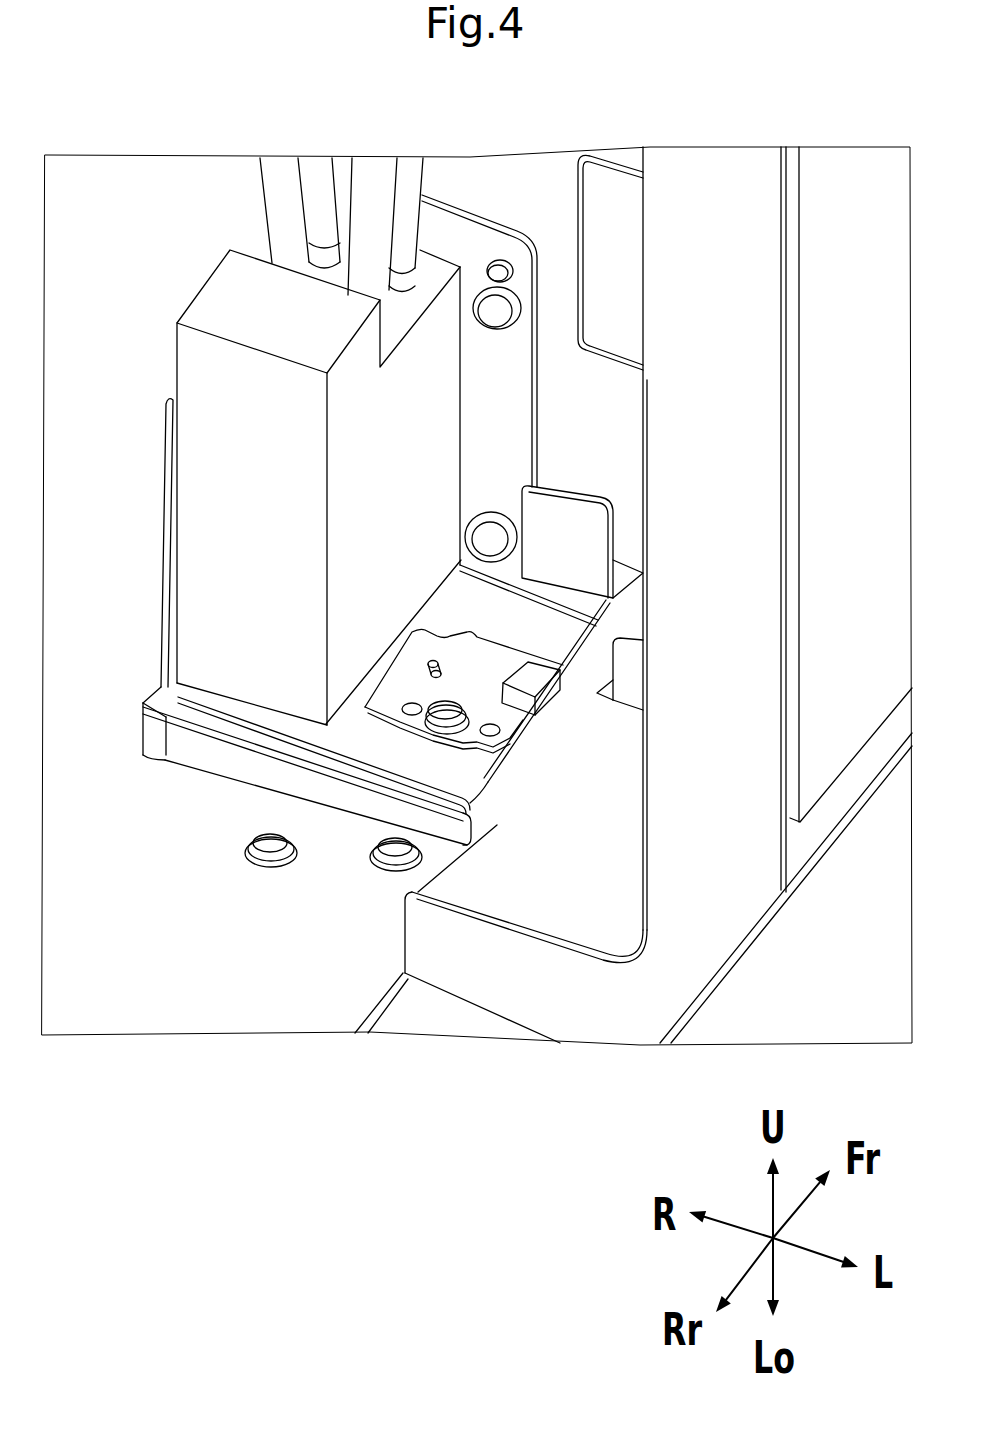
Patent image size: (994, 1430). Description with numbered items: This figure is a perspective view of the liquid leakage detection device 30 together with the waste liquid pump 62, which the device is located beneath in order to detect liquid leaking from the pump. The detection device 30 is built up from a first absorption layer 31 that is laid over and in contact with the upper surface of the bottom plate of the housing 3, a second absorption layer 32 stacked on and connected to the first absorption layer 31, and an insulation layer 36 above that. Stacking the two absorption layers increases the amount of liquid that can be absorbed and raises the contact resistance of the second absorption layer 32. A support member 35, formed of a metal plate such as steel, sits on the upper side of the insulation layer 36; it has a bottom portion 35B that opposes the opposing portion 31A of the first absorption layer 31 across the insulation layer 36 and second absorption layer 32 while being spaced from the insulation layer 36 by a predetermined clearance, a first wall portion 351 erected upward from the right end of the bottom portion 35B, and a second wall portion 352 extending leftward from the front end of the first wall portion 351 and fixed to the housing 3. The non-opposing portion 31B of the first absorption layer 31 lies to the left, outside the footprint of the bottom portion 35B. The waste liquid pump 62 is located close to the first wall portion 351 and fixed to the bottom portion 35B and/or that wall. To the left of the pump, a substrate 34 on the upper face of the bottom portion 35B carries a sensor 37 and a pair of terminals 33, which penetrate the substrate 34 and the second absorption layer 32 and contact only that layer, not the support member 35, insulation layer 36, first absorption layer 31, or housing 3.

The housing 3 is at (810, 914).
The liquid leakage detection device 30 is at (190, 822).
The first absorption layer 31 is at (149, 775).
The opposing portion 31A is at (140, 745).
The non-opposing portion 31B is at (440, 870).
The second absorption layer 32 is at (140, 730).
The pair of terminals 33 is at (450, 667).
The substrate 34 is at (530, 733).
The support member 35 is at (495, 795).
The bottom portion 35B is at (502, 765).
The insulation layer 36 is at (142, 707).
The sensor 37 is at (548, 693).
The first wall portion 351 is at (158, 538).
The second wall portion 352 is at (540, 421).
The waste liquid pump 62 is at (177, 375).